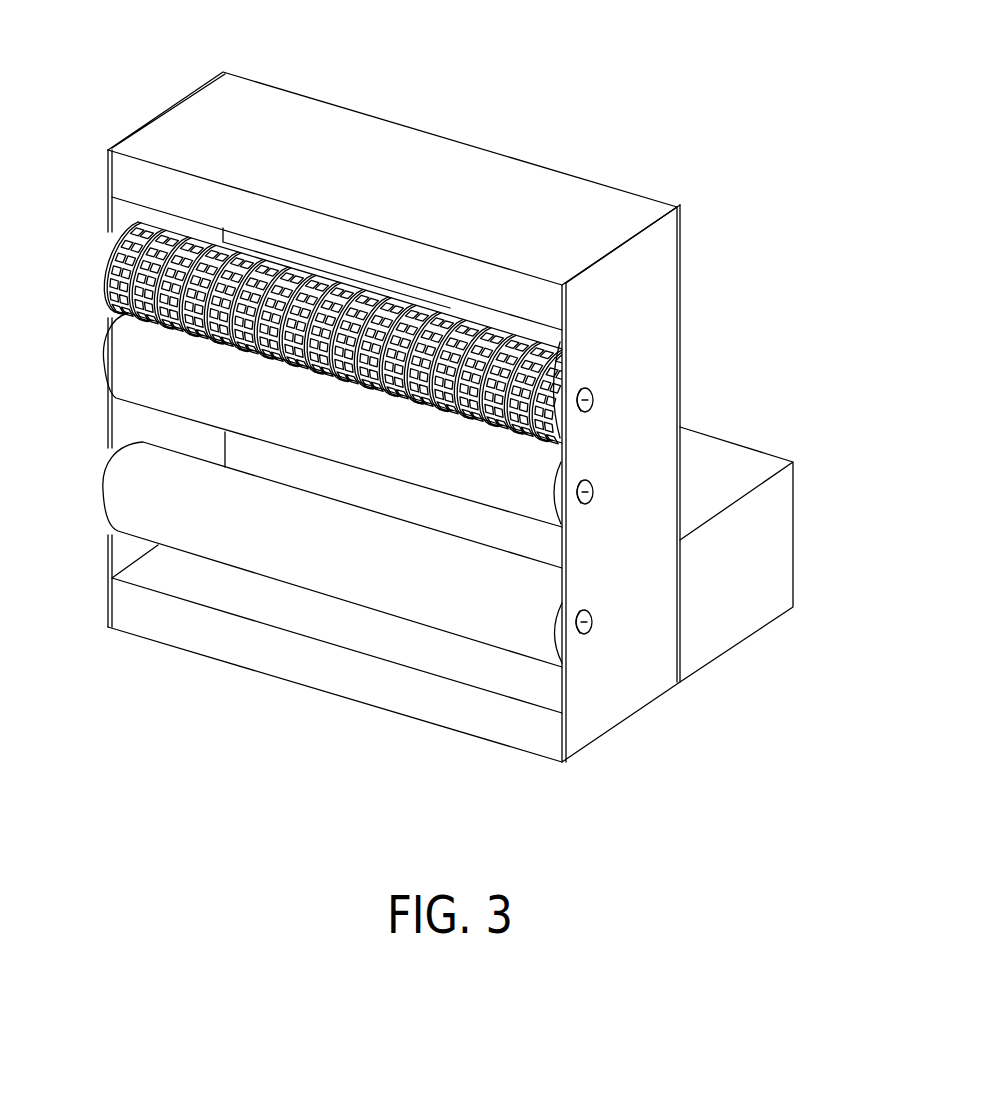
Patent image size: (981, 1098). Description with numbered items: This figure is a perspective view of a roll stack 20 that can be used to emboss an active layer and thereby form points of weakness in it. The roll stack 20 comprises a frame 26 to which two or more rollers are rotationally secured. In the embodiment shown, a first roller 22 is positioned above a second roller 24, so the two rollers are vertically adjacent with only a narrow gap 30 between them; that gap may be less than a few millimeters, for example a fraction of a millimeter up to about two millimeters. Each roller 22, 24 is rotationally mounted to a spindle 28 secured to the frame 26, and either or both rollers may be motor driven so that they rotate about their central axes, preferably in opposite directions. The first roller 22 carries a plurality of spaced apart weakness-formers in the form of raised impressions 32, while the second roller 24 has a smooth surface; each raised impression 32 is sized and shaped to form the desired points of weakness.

The roll stack 20 is at (703, 118).
The first roller 22 is at (108, 266).
The second roller 24 is at (110, 362).
The frame 26 is at (620, 677).
The spindle 28 is at (594, 400).
The narrow gap 30 is at (488, 422).
The raised impressions 32 is at (430, 312).